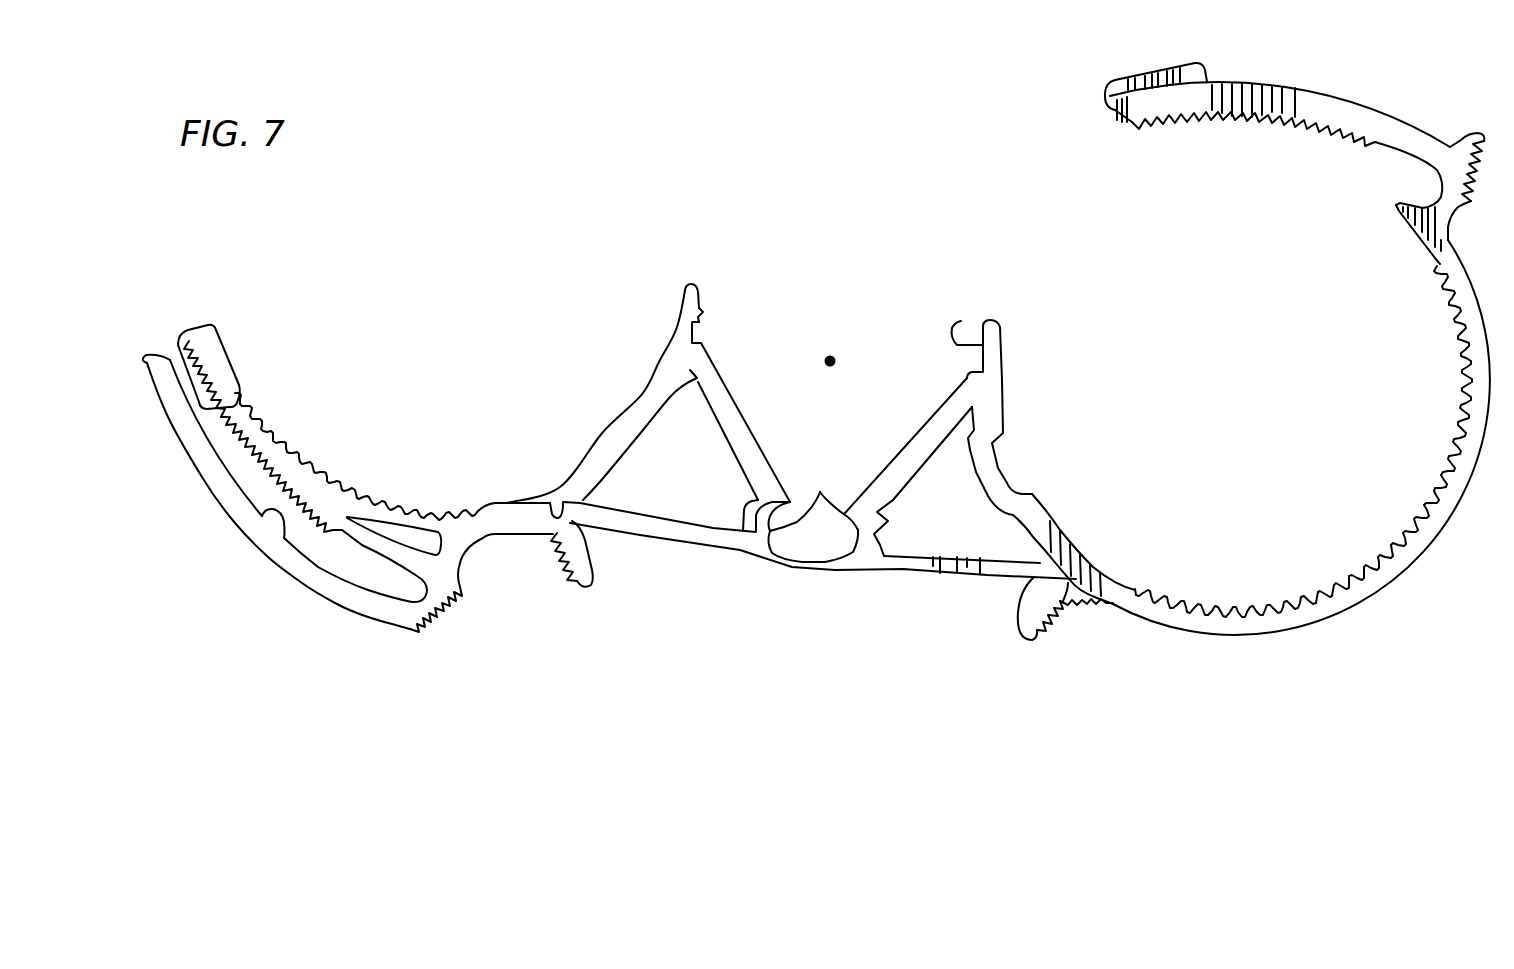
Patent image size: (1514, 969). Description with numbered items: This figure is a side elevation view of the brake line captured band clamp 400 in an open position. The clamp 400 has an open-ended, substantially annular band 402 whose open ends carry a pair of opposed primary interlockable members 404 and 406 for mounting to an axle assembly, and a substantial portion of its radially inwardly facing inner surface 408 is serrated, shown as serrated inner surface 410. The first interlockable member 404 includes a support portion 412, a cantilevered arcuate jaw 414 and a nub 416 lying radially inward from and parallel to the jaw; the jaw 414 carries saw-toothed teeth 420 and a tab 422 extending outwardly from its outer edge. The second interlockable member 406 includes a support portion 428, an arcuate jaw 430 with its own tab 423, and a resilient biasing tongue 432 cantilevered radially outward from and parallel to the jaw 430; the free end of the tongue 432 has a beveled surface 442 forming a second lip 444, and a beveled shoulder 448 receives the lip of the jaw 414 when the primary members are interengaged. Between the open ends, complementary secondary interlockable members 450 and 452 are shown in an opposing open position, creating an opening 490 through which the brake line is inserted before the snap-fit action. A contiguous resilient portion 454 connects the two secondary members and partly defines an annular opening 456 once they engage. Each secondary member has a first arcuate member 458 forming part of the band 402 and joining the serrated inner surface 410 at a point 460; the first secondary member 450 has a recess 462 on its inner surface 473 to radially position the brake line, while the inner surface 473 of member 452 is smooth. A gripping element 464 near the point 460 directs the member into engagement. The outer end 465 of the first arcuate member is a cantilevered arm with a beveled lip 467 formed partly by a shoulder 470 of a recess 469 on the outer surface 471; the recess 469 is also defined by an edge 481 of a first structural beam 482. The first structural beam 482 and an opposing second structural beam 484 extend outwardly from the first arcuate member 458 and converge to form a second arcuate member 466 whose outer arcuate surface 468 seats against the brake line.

The brake line captured band clamp 400 is at (755, 182).
The annular band 402 is at (268, 430).
The first interlockable member 404 is at (1326, 78).
The second interlockable member 406 is at (262, 612).
The inner surface 408 is at (1377, 545).
The serrated inner surface 410 is at (300, 464).
The support portion 412 is at (1472, 185).
The arcuate jaw 414 is at (1277, 93).
The nub 416 is at (1399, 209).
The teeth 420 is at (1202, 120).
The tab 422 is at (1128, 80).
The tab 423 is at (188, 342).
The support portion 428 is at (430, 612).
The arcuate jaw 430 is at (268, 466).
The resilient biasing tongue 432 is at (226, 489).
The beveled surface 442 is at (161, 350).
The second lip 444 is at (145, 370).
The beveled shoulder 448 is at (279, 528).
The first secondary interlockable member 450 is at (1020, 397).
The second secondary interlockable member 452 is at (604, 426).
The contiguous resilient portion 454 is at (812, 570).
The annular opening 456 is at (841, 548).
The first arcuate member 458 is at (660, 402).
The point 460 is at (513, 508).
The recess 462 is at (1008, 482).
The gripping element 464 is at (561, 557).
The outer end 465 is at (997, 360).
The second arcuate member 466 is at (756, 513).
The beveled lip 467 is at (699, 297).
The outer arcuate surface 468 is at (820, 491).
The recess 469 is at (556, 511).
The shoulder 470 is at (704, 313).
The outer surface 471 is at (965, 497).
The inner surface 473 is at (1034, 494).
The edge 481 is at (695, 386).
The first structural beam 482 is at (745, 420).
The second structural beam 484 is at (672, 535).
The opening 490 is at (831, 352).